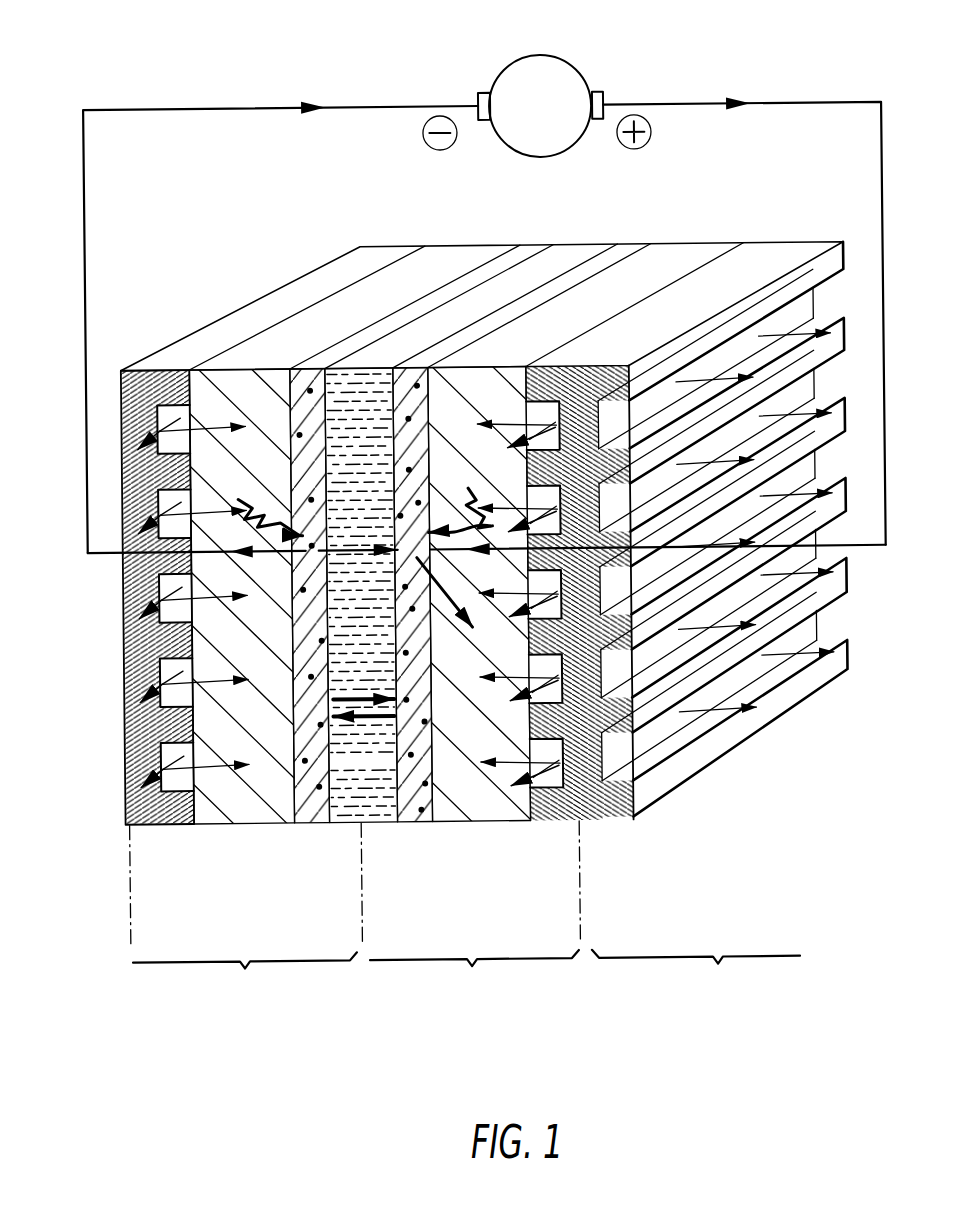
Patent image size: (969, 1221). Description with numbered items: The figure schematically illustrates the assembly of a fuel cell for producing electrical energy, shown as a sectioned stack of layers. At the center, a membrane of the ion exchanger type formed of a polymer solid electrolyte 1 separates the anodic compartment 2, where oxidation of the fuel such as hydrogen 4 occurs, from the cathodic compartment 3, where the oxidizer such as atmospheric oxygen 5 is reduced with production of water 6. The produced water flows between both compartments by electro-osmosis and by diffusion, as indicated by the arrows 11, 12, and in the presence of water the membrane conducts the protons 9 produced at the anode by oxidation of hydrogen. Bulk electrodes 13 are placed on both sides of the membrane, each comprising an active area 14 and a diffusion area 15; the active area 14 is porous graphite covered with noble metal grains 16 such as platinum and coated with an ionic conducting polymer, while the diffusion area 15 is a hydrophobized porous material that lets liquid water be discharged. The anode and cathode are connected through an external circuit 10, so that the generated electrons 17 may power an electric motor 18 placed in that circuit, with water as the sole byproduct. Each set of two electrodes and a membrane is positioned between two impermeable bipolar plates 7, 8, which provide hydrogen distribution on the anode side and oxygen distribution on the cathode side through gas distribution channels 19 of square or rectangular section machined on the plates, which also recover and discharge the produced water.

The polymer solid electrolyte membrane 1 is at (381, 797).
The anodic compartment 2 is at (465, 915).
The cathodic compartment 3 is at (470, 914).
The hydrogen 4 is at (240, 497).
The oxygen 5 is at (470, 487).
The water 6 is at (452, 605).
The impermeable plate 7 is at (194, 344).
The impermeable plate 8 is at (780, 296).
The protons 9 is at (367, 546).
The external circuit 10 is at (764, 104).
The water flow arrow 11 is at (366, 694).
The water flow arrow 12 is at (368, 720).
The bulk electrode 13 is at (265, 832).
The active area 14 is at (306, 807).
The diffusion area 15 is at (228, 800).
The noble metal grains 16 is at (453, 818).
The electrons 17 is at (279, 105).
The electric motor 18 is at (538, 82).
The gas distribution channels 19 is at (131, 738).